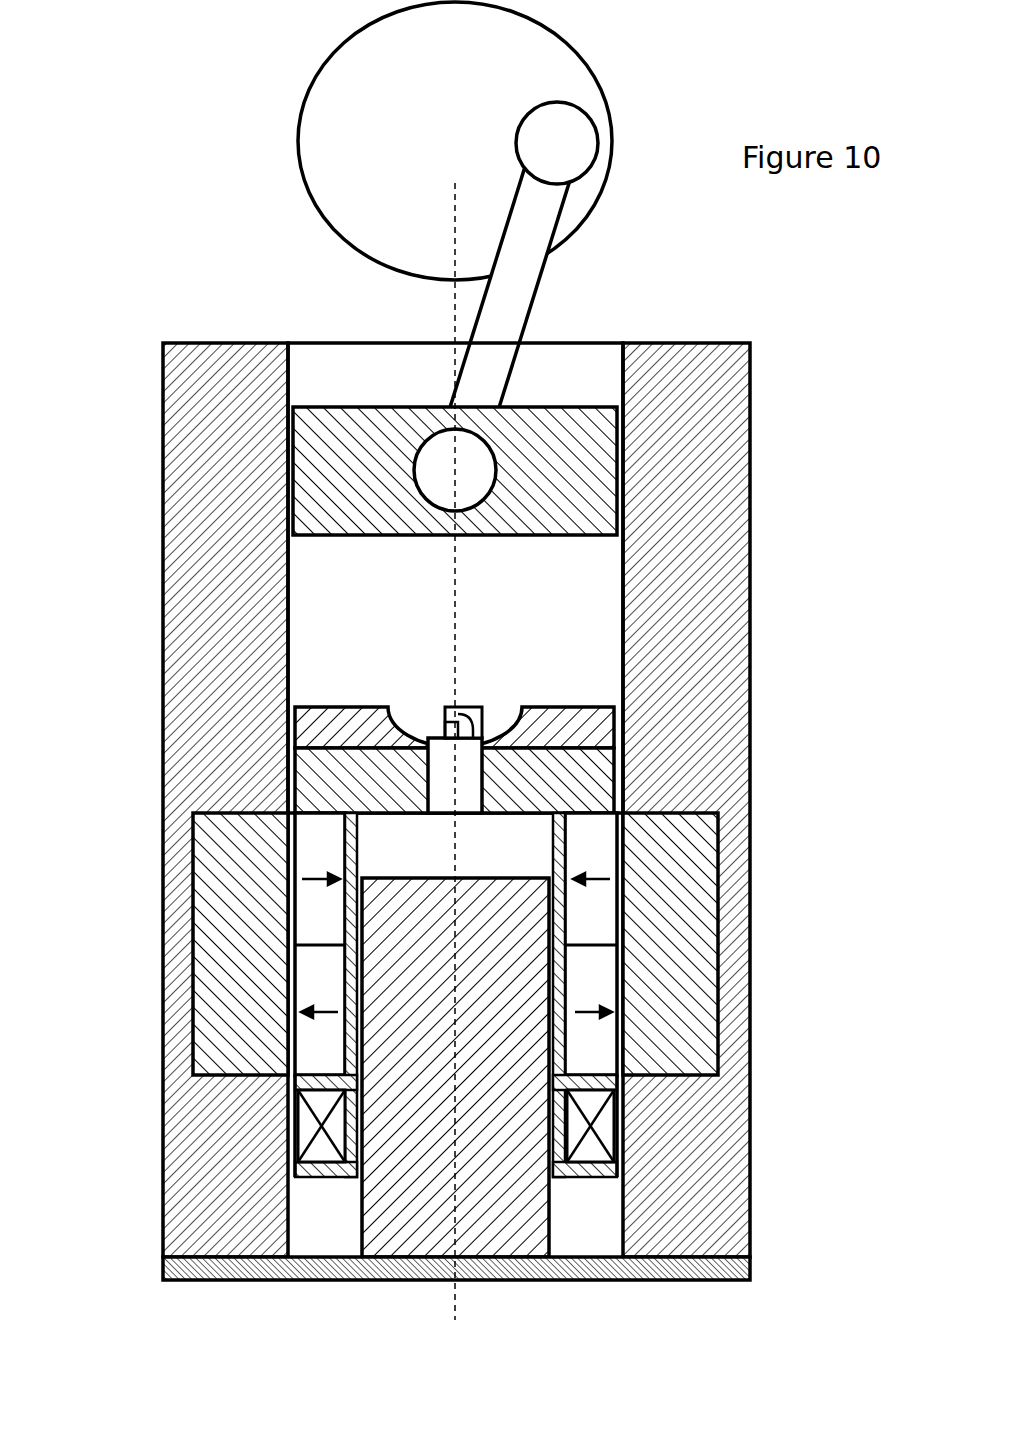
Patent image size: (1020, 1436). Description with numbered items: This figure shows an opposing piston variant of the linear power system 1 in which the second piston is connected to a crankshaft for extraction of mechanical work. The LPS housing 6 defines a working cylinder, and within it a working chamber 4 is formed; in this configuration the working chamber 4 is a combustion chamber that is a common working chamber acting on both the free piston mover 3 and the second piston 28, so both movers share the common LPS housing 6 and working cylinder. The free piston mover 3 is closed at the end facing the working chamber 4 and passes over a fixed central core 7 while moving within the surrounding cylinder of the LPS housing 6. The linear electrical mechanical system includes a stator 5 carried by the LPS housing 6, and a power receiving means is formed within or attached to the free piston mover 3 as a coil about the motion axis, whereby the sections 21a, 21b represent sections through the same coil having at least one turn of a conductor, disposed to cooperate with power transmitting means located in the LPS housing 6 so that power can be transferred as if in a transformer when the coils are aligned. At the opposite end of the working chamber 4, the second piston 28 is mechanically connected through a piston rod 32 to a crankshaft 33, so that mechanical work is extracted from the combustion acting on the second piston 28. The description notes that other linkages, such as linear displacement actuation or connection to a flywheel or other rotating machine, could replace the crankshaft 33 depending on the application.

The LPS 1 is at (203, 283).
The free piston mover 3 is at (313, 775).
The working chamber 4 is at (313, 662).
The stator 5 is at (683, 1002).
The LPS housing 6 is at (682, 638).
The fixed central core 7 is at (340, 1262).
The power receiving means coil section 21a is at (322, 1143).
The power receiving means coil section 21b is at (575, 1140).
The second piston 28 is at (320, 468).
The piston rod 32 is at (500, 315).
The crankshaft 33 is at (565, 76).